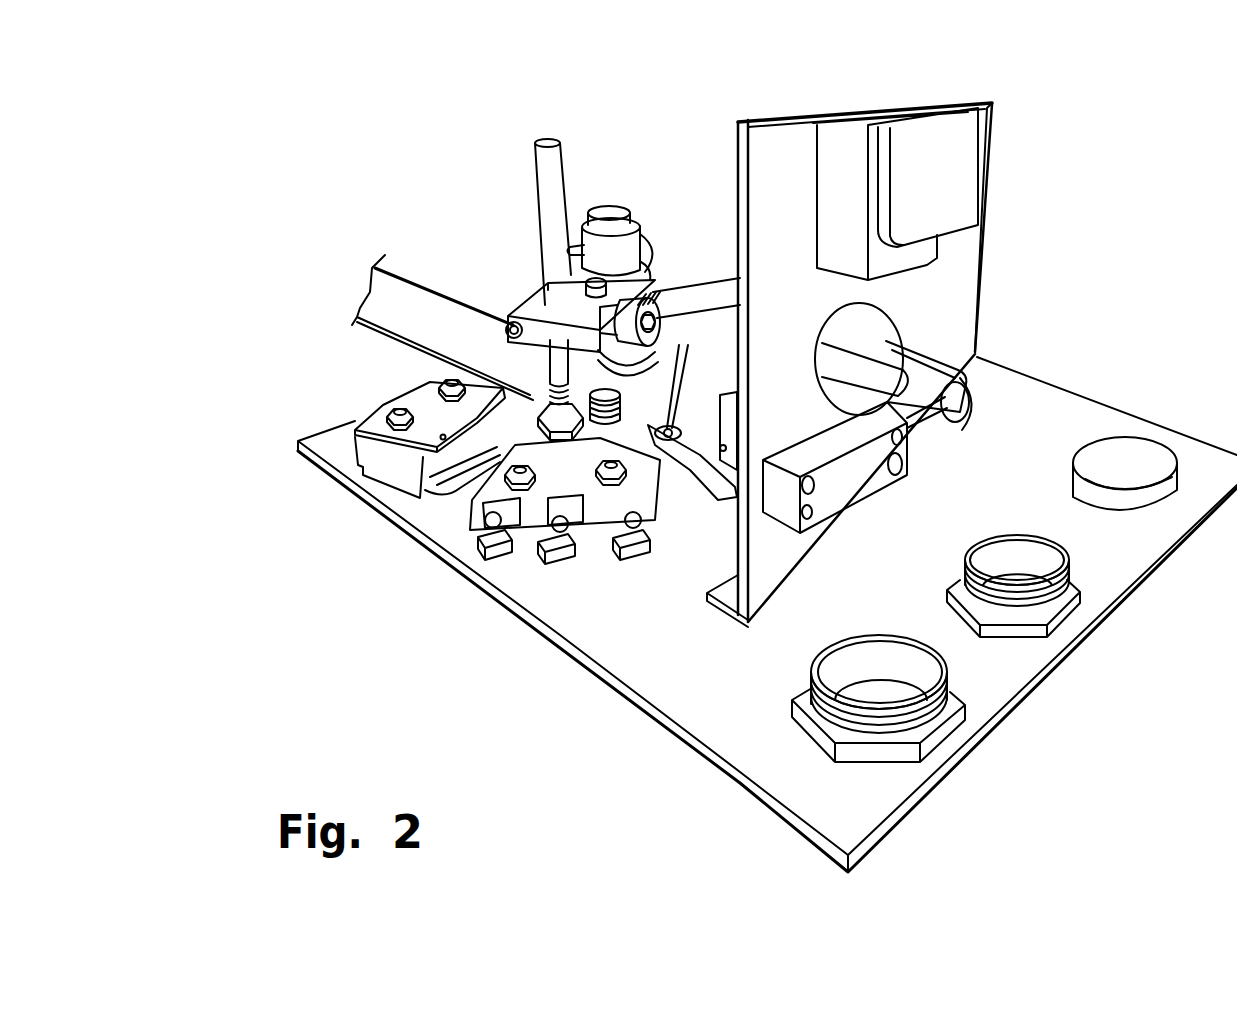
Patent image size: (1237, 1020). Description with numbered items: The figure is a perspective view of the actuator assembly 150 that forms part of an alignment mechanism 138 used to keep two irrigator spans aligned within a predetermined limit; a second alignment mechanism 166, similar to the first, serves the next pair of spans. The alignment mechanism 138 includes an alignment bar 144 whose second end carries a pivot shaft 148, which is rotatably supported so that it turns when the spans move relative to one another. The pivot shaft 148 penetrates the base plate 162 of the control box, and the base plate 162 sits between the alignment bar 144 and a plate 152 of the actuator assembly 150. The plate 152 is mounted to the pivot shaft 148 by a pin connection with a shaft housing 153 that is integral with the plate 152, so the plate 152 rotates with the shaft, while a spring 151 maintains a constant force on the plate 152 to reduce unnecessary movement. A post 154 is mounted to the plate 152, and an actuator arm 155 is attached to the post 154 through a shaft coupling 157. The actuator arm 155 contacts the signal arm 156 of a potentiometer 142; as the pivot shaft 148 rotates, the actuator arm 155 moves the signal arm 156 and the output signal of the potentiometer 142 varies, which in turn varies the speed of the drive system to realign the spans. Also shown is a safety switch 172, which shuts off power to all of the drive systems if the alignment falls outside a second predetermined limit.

The alignment mechanism 138 is at (340, 611).
The second alignment mechanism 166 is at (705, 599).
The potentiometer 142 is at (783, 503).
The alignment bar 144 is at (403, 312).
The pivot shaft 148 is at (611, 215).
The actuator assembly 150 is at (515, 203).
The spring 151 is at (642, 283).
The plate 152 is at (690, 355).
The shaft housing 153 is at (643, 237).
The post 154 is at (553, 173).
The actuator arm 155 is at (672, 300).
The signal arm 156 is at (935, 420).
The shaft coupling 157 is at (563, 290).
The base plate 162 is at (593, 672).
The safety switch 172 is at (732, 430).